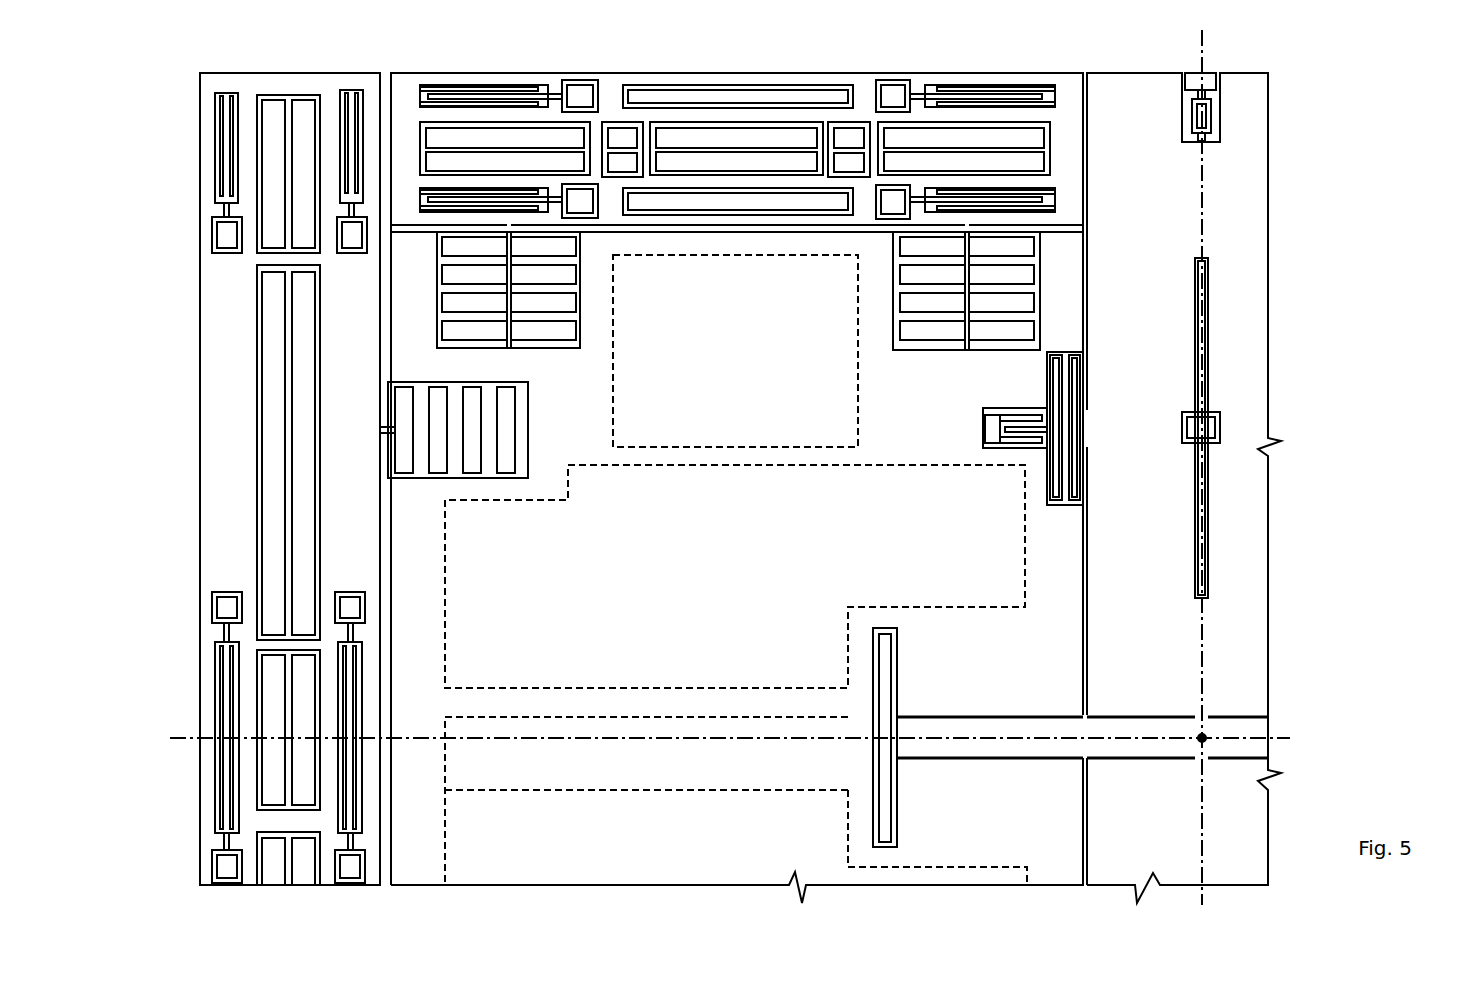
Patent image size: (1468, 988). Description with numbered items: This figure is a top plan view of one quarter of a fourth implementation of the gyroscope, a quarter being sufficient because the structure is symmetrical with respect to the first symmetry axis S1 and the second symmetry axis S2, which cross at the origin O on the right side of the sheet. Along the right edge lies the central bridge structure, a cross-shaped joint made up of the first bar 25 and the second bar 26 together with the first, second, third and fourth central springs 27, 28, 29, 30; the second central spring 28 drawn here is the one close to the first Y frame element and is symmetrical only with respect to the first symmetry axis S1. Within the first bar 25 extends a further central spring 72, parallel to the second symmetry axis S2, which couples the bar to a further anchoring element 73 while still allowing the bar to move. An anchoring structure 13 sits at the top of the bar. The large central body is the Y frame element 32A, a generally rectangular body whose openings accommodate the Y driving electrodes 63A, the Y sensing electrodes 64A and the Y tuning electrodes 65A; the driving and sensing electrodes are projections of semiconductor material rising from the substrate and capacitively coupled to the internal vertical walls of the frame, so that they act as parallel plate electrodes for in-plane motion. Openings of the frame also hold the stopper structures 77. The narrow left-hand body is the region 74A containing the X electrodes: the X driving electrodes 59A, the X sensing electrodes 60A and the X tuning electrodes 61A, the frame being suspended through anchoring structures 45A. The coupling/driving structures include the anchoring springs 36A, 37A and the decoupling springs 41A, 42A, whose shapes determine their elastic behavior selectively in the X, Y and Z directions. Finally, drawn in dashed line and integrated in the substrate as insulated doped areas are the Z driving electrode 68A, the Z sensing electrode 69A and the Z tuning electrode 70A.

The anchoring structure 13 is at (1216, 78).
The first bar 25 is at (1154, 525).
The second bar 26 is at (995, 727).
The first central spring 27 is at (1207, 715).
The second central spring 28 is at (1225, 118).
The third central spring 29 is at (897, 648).
The fourth central spring 30 is at (1000, 405).
The Y frame element 32A is at (610, 78).
The anchoring spring 36A is at (215, 140).
The anchoring spring 37A is at (470, 188).
The decoupling spring 41A is at (436, 487).
The decoupling spring 42A is at (556, 352).
The anchoring structure 45A is at (350, 242).
The X driving electrode 59A is at (305, 785).
The X sensing electrode 60A is at (300, 390).
The X tuning electrode 61A is at (305, 115).
The Y driving electrode 63A is at (782, 165).
The Y sensing electrode 64A is at (442, 165).
The Y tuning electrode 65A is at (628, 160).
The Z driving electrode 68A is at (750, 770).
The Z sensing electrode 69A is at (848, 378).
The Z tuning electrode 70A is at (880, 495).
The further central spring 72 is at (1215, 330).
The further anchoring element 73 is at (1215, 425).
The side portion 74A is at (358, 70).
The stopper structure 77 is at (700, 205).
The origin point O is at (1205, 735).
The first symmetry axis S1 is at (175, 735).
The second symmetry axis S2 is at (1210, 45).